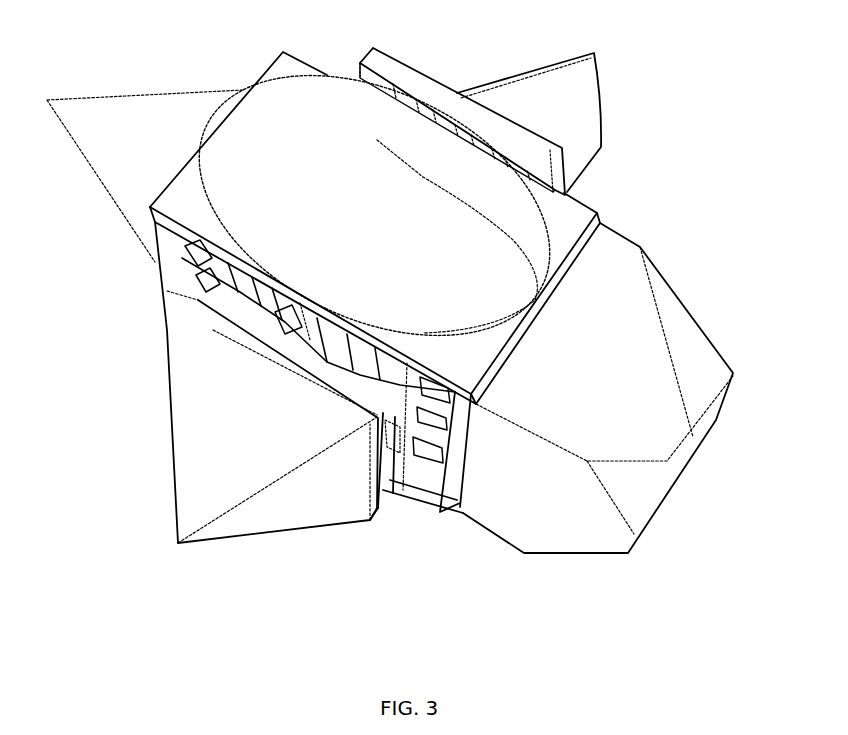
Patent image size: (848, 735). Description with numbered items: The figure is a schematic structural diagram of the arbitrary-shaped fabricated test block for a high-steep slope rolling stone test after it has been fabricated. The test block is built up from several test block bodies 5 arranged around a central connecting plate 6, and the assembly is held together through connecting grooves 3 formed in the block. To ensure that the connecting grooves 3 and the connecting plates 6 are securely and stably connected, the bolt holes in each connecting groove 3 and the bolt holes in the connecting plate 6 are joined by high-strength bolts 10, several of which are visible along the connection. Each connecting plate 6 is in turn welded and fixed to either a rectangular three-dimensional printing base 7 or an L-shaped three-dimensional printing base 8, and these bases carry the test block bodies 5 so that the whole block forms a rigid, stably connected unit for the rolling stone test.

The connecting groove 3 is at (357, 378).
The test block body 5 is at (118, 127).
The connecting plate 6 is at (350, 347).
The rectangular 3D printing base 7 is at (563, 150).
The L-shaped 3D printing base 8 is at (158, 228).
The high-strength bolt 10 is at (283, 325).